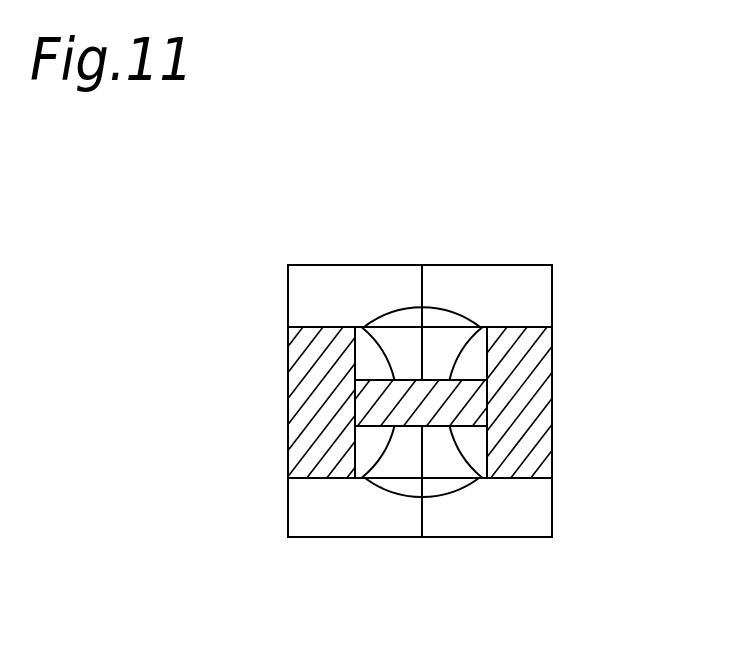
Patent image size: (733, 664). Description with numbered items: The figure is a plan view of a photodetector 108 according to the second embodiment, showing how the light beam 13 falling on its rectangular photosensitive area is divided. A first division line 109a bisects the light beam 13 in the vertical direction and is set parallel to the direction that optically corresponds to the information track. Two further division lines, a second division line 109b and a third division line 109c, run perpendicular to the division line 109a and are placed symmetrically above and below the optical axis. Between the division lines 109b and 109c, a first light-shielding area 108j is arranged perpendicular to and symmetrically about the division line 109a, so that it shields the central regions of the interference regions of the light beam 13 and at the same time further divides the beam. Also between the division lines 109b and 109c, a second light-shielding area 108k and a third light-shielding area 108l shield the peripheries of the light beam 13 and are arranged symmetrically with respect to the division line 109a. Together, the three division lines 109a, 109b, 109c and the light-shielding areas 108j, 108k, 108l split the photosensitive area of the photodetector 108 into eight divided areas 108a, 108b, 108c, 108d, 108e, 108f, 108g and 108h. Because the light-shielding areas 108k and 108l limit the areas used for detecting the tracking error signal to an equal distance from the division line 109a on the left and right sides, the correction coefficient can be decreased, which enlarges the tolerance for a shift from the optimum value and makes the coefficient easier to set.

The photodetector 108 is at (255, 250).
The divided area 108a is at (340, 297).
The divided area 108b is at (487, 287).
The divided area 108c is at (370, 360).
The divided area 108d is at (473, 358).
The divided area 108e is at (363, 443).
The divided area 108f is at (473, 443).
The divided area 108g is at (335, 522).
The divided area 108h is at (495, 522).
The first light-shielding area 108j is at (407, 412).
The second light-shielding area 108k is at (318, 397).
The third light-shielding area 108l is at (530, 410).
The first division line 109a is at (420, 265).
The second division line 109b is at (553, 328).
The third division line 109c is at (553, 479).
The light beam 13 is at (449, 300).